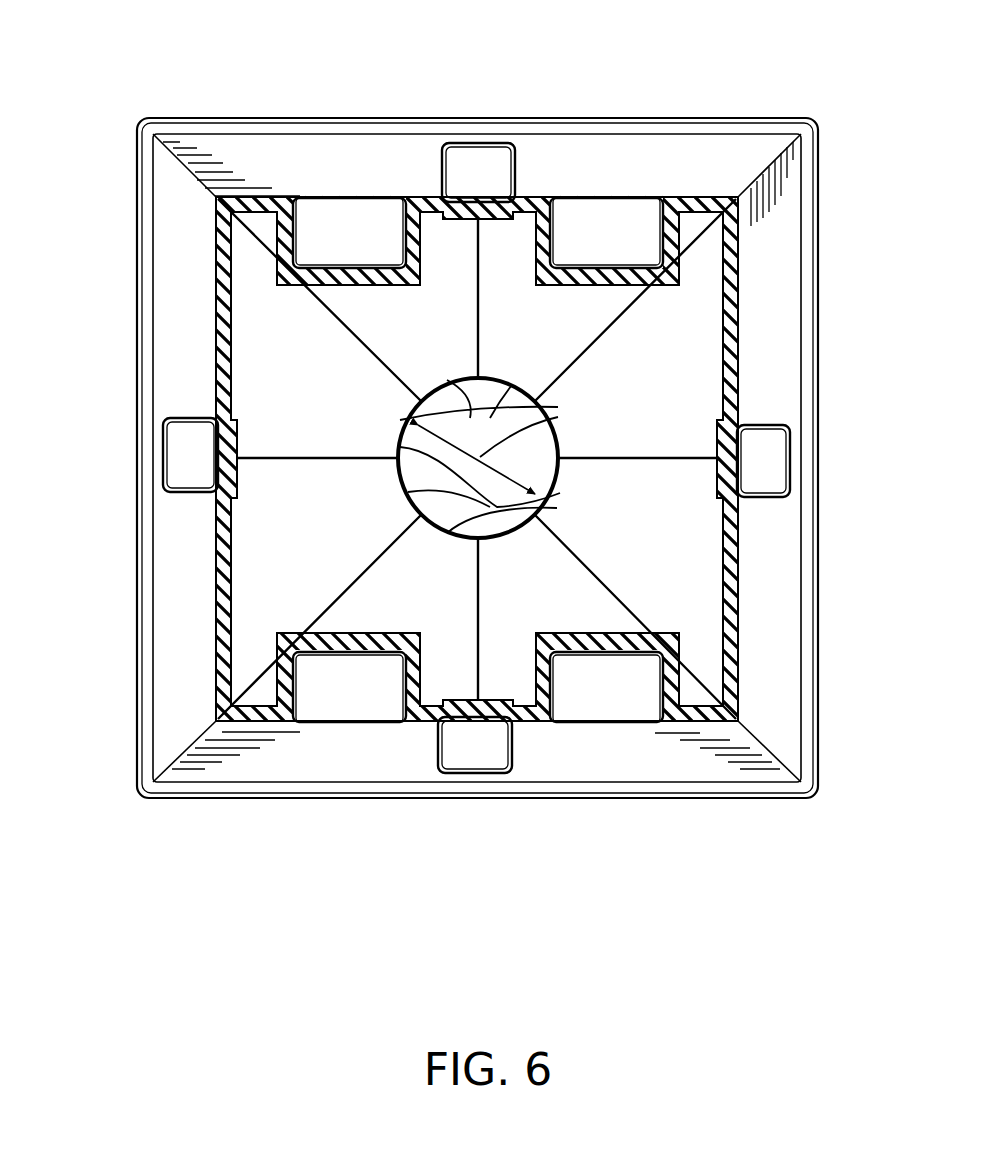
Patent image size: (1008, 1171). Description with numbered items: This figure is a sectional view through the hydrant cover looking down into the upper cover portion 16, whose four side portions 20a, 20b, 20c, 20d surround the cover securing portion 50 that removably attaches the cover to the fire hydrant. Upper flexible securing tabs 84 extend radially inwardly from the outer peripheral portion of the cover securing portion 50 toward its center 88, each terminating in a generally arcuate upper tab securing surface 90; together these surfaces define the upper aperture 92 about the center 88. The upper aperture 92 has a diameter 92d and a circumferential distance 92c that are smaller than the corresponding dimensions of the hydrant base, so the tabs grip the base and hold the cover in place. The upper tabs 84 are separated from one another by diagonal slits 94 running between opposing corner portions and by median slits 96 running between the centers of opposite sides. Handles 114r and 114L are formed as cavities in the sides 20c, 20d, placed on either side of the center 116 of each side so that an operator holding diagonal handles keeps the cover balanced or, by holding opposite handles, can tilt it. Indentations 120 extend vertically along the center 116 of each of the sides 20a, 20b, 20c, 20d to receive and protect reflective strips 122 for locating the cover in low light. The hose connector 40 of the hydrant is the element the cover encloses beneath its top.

The upper cover portion 16 is at (770, 350).
The side portion 20a is at (240, 680).
The side portion 20b is at (710, 678).
The side portion 20c is at (675, 725).
The side portion 20d is at (680, 200).
The connector 40 is at (262, 745).
The cover securing portion 50 is at (405, 398).
The upper flexible securing tab 84 is at (347, 357).
The center 88 is at (548, 420).
The upper tab securing surface 90 is at (257, 350).
The upper aperture 92 is at (553, 438).
The circumferential distance of upper aperture 92c is at (497, 540).
The diameter of upper aperture 92d is at (407, 440).
The diagonal slit 94 is at (262, 247).
The median slit 96 is at (493, 237).
The handle 114L is at (648, 215).
The handle 114r is at (322, 215).
The center of side 116 is at (500, 123).
The indentation 120 is at (463, 160).
The reflective strip 122 is at (440, 173).